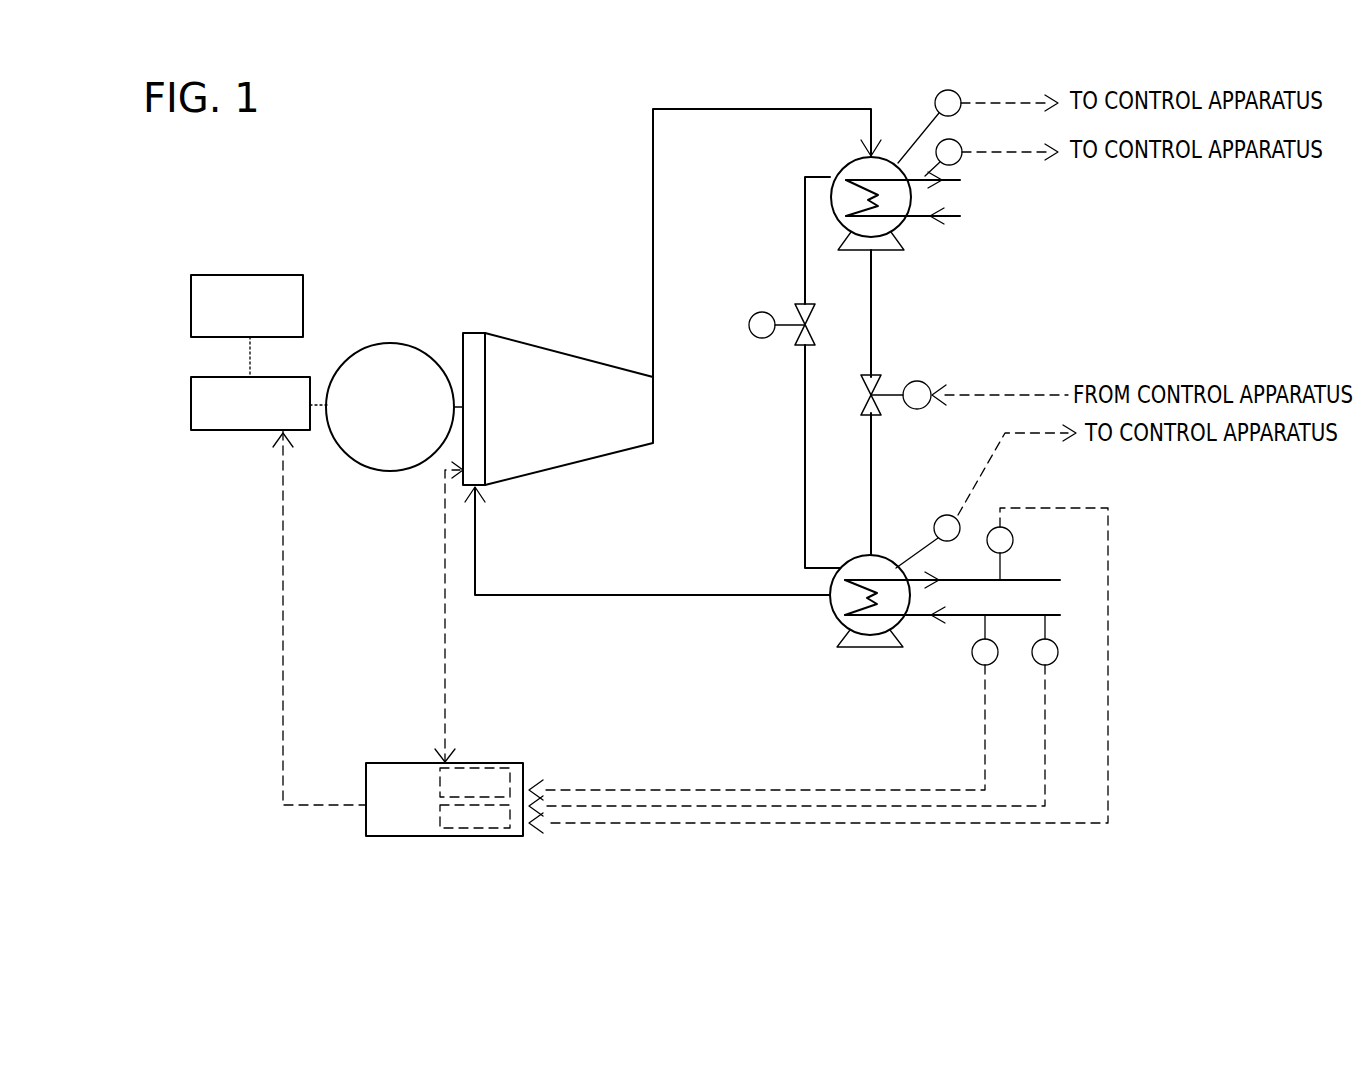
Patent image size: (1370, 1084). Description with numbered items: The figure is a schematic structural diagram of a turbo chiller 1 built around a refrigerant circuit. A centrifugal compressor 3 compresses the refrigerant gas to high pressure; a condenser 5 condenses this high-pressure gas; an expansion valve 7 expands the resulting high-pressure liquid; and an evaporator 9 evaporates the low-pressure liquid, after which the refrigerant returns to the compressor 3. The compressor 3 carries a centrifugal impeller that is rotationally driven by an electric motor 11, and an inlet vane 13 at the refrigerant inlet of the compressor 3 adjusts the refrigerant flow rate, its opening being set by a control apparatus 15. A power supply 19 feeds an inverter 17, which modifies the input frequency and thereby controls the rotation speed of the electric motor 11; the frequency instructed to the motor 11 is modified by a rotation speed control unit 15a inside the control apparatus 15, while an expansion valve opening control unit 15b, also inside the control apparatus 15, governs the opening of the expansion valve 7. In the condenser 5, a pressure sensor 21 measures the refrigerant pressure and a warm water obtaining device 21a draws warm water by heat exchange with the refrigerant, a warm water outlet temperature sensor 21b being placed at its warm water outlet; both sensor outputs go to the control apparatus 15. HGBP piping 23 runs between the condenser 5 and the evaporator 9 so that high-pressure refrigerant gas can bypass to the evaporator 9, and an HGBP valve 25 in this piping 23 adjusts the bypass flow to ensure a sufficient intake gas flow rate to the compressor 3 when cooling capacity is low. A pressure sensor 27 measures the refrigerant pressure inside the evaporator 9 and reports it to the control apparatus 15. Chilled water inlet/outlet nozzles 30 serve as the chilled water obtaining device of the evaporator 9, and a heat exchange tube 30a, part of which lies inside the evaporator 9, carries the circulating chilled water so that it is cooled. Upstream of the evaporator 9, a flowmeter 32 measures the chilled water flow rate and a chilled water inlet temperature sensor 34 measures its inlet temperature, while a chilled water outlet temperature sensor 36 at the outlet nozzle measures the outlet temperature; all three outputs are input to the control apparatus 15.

The turbo chiller 1 is at (375, 203).
The centrifugal compressor 3 is at (555, 345).
The condenser 5 is at (840, 165).
The expansion valve 7 is at (925, 383).
The evaporator 9 is at (850, 560).
The electric motor 11 is at (390, 343).
The inlet vane 13 is at (473, 333).
The control apparatus 15 is at (420, 836).
The rotation speed control unit 15a is at (492, 828).
The expansion valve opening control unit 15b is at (478, 768).
The inverter 17 is at (237, 431).
The power supply 19 is at (247, 275).
The pressure sensor 21 is at (960, 112).
The warm water obtaining device 21a is at (918, 221).
The warm water outlet temperature sensor 21b is at (962, 160).
The HGBP piping 23 is at (805, 455).
The HGBP valve 25 is at (750, 320).
The pressure sensor 27 is at (950, 515).
The chilled water inlet/outlet nozzles 30 is at (920, 622).
The heat exchange tube 30a is at (880, 625).
The flowmeter 32 is at (1033, 655).
The chilled water inlet temperature sensor 34 is at (972, 652).
The chilled water outlet temperature sensor 36 is at (1013, 540).